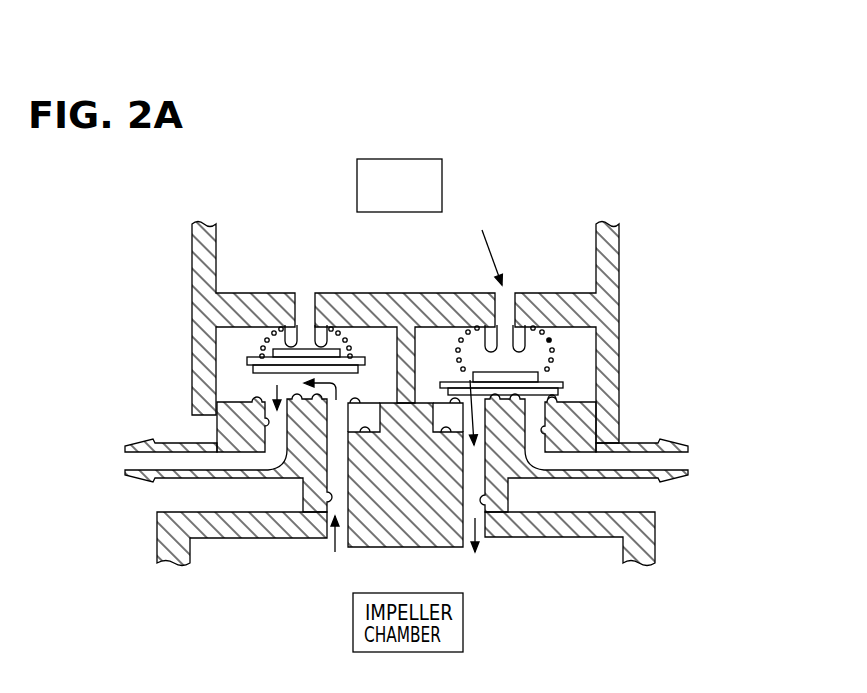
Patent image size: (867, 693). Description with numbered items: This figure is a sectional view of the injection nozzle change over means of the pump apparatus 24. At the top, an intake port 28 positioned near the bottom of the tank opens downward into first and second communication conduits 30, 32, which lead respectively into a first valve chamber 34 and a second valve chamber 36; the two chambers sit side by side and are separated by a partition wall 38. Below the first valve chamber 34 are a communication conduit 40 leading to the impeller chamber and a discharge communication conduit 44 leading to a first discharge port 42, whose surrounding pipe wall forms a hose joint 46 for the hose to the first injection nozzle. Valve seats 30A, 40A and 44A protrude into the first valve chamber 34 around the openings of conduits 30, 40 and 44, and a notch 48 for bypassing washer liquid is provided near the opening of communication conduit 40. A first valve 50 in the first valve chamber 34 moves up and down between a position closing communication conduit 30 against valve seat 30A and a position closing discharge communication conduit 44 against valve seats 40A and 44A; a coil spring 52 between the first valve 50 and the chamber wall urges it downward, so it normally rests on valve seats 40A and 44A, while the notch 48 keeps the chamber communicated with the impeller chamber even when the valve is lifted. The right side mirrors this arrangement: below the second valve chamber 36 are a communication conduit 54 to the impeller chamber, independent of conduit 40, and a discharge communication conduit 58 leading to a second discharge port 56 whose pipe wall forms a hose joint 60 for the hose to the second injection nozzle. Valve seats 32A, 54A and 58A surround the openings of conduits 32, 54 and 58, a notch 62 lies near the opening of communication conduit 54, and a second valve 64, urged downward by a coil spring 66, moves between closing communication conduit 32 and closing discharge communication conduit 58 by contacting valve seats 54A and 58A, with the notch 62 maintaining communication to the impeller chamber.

The pump apparatus 24 is at (431, 333).
The intake port 28 is at (415, 246).
The first communication conduit 30 is at (308, 318).
The valve seat 30A is at (292, 340).
The second communication conduit 32 is at (493, 363).
The valve seat 32A is at (522, 327).
The first valve chamber 34 is at (222, 346).
The second valve chamber 36 is at (590, 352).
The partition wall 38 is at (411, 350).
The communication conduit 40 is at (330, 497).
The valve seat 40A is at (300, 483).
The first discharge port 42 is at (125, 470).
The discharge communication conduit 44 is at (265, 423).
The valve seat 44A is at (300, 393).
The hose joint 46 is at (143, 480).
The notch 48 is at (356, 403).
The first valve 50 is at (367, 355).
The coil spring 52 is at (350, 337).
The communication conduit 54 is at (493, 510).
The valve seat 54A is at (515, 478).
The second discharge port 56 is at (686, 458).
The discharge communication conduit 58 is at (540, 434).
The valve seat 58A is at (555, 402).
The hose joint 60 is at (660, 476).
The notch 62 is at (433, 376).
The second valve 64 is at (530, 365).
The coil spring 66 is at (552, 340).